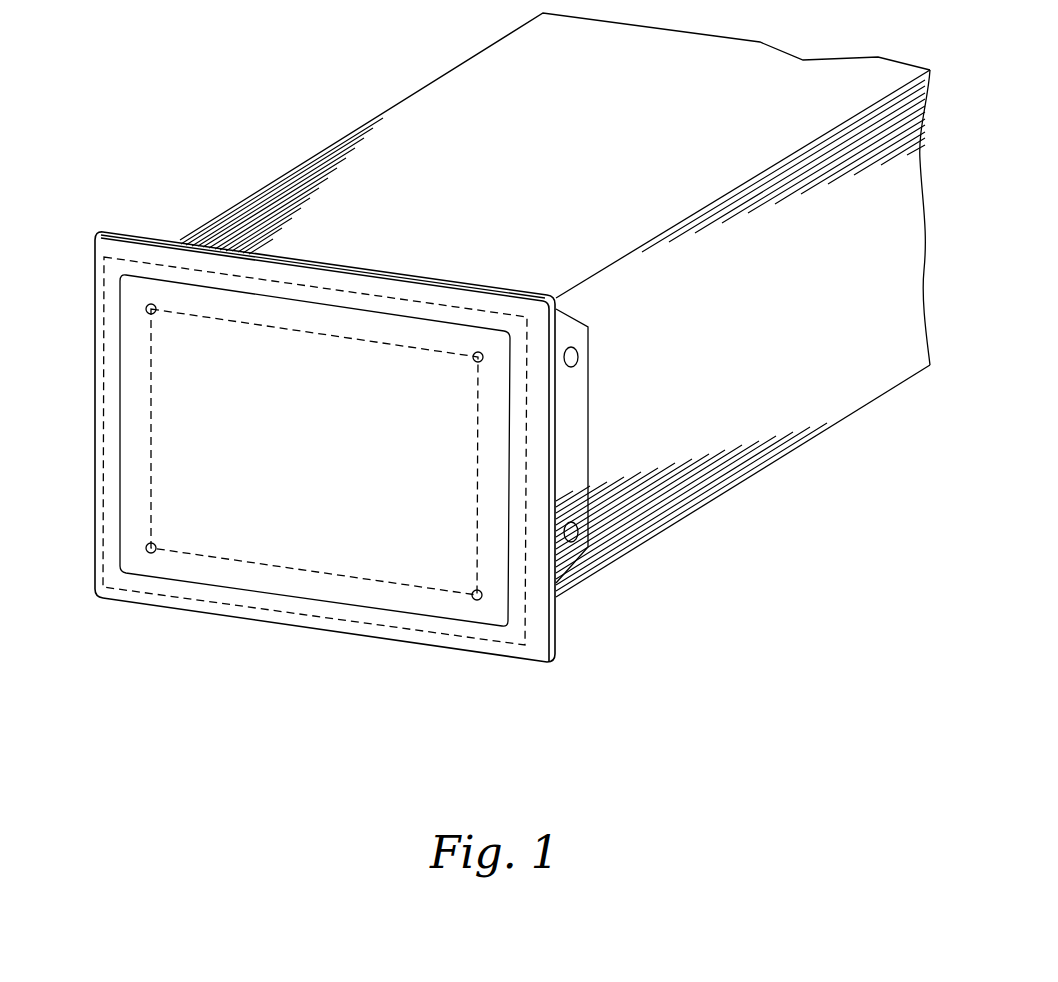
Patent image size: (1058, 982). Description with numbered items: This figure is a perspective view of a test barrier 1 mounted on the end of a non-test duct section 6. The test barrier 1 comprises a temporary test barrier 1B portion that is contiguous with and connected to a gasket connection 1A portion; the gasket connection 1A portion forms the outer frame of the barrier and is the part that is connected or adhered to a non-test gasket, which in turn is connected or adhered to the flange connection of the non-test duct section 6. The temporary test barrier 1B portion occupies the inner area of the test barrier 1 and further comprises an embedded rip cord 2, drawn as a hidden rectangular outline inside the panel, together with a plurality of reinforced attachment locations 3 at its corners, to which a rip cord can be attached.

The test barrier 1 is at (233, 508).
The gasket connection portion 1A is at (163, 258).
The temporary test barrier portion 1B is at (132, 450).
The embedded rip cord 2 is at (317, 575).
The reinforced attachment locations 3 is at (477, 601).
The non-test duct section 6 is at (435, 143).